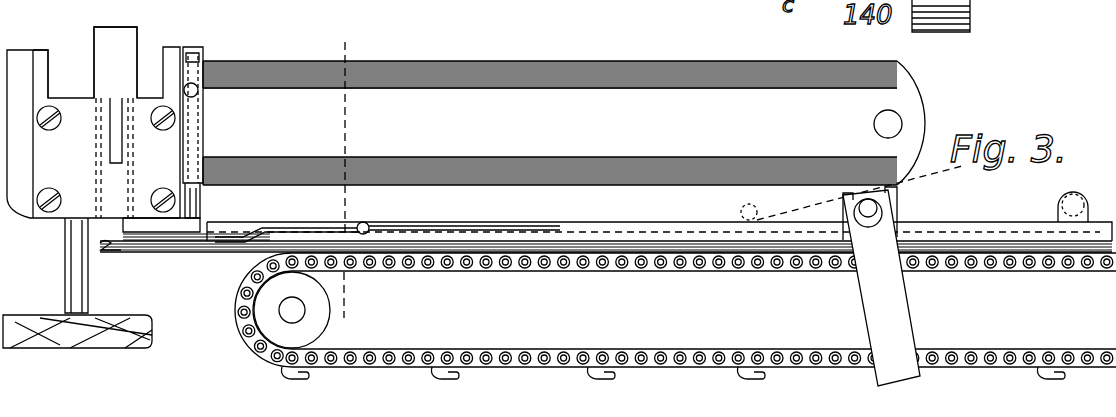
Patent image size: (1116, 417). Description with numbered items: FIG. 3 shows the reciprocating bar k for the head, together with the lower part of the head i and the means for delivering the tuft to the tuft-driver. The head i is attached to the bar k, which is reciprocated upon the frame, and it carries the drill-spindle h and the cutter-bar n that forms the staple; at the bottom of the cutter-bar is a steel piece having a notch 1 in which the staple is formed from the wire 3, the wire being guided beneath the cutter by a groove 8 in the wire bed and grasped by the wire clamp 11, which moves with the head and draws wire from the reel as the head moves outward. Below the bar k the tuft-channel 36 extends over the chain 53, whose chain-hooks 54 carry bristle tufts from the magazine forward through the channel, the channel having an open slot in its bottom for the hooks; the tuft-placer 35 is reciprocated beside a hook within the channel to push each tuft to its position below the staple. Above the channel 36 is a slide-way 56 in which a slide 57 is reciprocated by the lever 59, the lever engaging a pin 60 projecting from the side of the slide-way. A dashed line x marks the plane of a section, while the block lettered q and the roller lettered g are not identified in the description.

The notch 1 is at (108, 209).
The wire 3 is at (601, 231).
The groove 8 is at (160, 237).
The wire clamp 11 is at (188, 226).
The tuft-placer 35 is at (114, 251).
The tuft-channel 36 is at (258, 246).
The chain 53 is at (421, 273).
The chain-hooks 54 is at (466, 381).
The slide-way 56 is at (279, 224).
The slide 57 is at (378, 228).
The lever 59 is at (905, 309).
The pin 60 is at (895, 208).
The body block q is at (93, 122).
The head i is at (41, 50).
The cutter-bar n is at (95, 44).
The bar k is at (564, 123).
The section line x is at (342, 182).
The drill-spindle h is at (64, 252).
The roller g is at (25, 315).